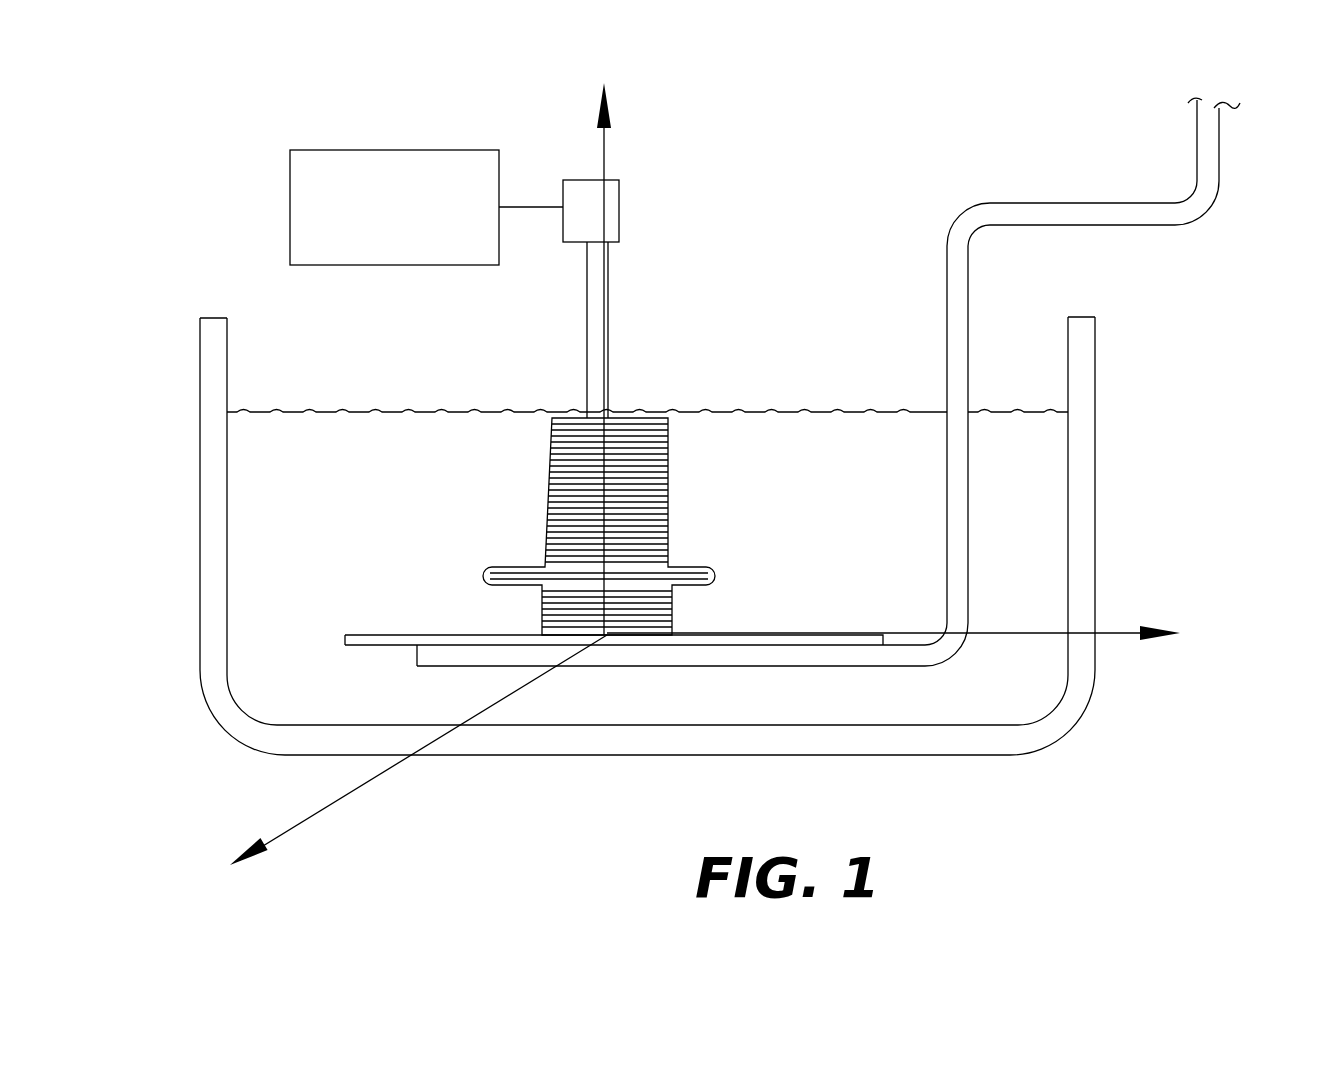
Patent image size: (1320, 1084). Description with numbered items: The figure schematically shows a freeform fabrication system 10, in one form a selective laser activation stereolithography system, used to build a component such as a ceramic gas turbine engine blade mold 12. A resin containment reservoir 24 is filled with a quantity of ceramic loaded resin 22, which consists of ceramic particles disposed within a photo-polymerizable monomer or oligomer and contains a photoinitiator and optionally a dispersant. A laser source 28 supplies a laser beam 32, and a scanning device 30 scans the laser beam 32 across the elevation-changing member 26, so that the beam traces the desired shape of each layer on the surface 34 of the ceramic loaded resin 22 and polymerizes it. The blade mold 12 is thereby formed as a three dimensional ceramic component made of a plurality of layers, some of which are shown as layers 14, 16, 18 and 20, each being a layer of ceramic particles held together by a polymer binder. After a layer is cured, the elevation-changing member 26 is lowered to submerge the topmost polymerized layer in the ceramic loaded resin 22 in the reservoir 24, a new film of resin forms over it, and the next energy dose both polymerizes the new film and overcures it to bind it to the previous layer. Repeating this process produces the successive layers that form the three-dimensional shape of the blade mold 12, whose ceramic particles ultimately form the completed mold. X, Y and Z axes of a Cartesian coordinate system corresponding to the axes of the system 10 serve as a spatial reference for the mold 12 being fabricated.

The freeform fabrication system 10 is at (1165, 452).
The gas turbine engine blade mold 12 is at (542, 460).
The layer 14 is at (668, 552).
The layer 16 is at (668, 545).
The layer 18 is at (668, 535).
The layer 20 is at (668, 525).
The ceramic loaded resin 22 is at (1013, 550).
The resin containment reservoir 24 is at (1080, 715).
The elevation-changing member 26 is at (1197, 148).
The laser source 28 is at (387, 150).
The scanning device 30 is at (620, 207).
The laser beam 32 is at (587, 355).
The surface 34 is at (767, 410).